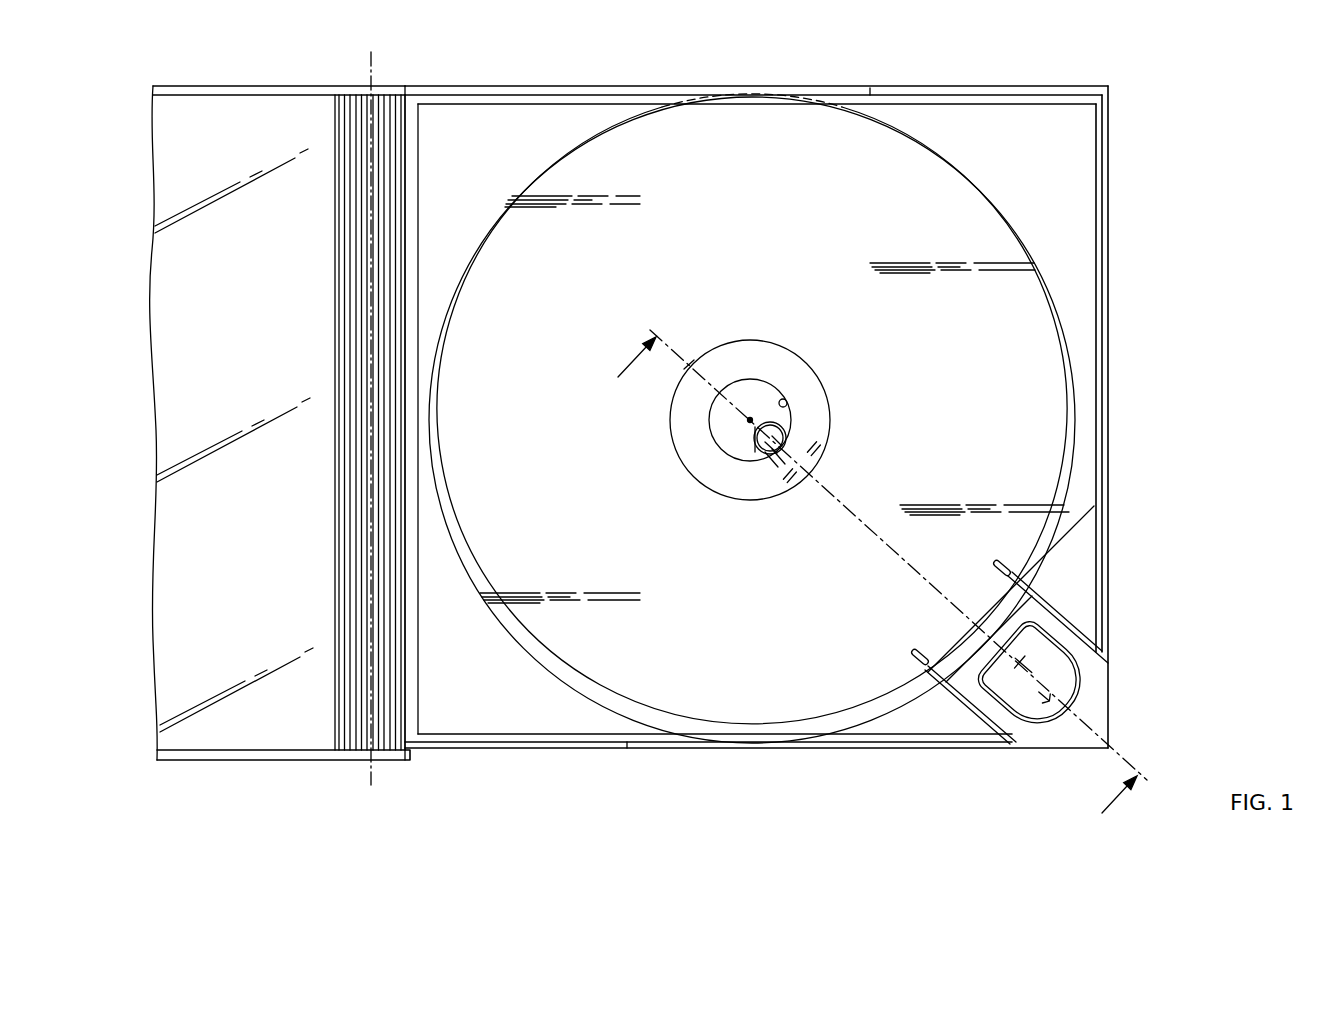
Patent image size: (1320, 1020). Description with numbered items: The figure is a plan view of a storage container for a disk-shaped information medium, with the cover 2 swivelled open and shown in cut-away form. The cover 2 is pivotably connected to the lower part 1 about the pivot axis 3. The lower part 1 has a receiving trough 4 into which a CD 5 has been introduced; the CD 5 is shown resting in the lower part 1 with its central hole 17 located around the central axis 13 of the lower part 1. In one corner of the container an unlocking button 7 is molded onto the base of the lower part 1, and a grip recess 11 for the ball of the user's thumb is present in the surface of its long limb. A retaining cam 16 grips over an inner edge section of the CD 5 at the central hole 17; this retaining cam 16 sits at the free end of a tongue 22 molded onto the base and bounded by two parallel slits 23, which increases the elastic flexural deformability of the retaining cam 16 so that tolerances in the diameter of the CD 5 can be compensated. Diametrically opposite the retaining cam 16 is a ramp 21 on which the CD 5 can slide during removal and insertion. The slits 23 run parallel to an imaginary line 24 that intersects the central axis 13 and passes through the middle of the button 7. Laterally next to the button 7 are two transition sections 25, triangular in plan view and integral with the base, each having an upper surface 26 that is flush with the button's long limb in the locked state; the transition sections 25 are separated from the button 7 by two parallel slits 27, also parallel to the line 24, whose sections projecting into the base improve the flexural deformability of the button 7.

The lower part 1 is at (602, 748).
The cover 2 is at (241, 740).
The pivot axis 3 is at (378, 778).
The receiving trough 4 is at (1077, 182).
The CD 5 is at (878, 155).
The unlocking button 7 is at (1124, 712).
The grip recess 11 is at (1045, 722).
The central axis 13 is at (747, 422).
The retaining cam 16 is at (757, 450).
The central hole 17 is at (785, 402).
The ramp 21 is at (737, 390).
The tongue 22 is at (800, 483).
The slits 23 is at (824, 444).
The imaginary line 24 is at (897, 565).
The transition sections 25 is at (1090, 551).
The upper surface 26 is at (1089, 617).
The slits 27 is at (1047, 600).